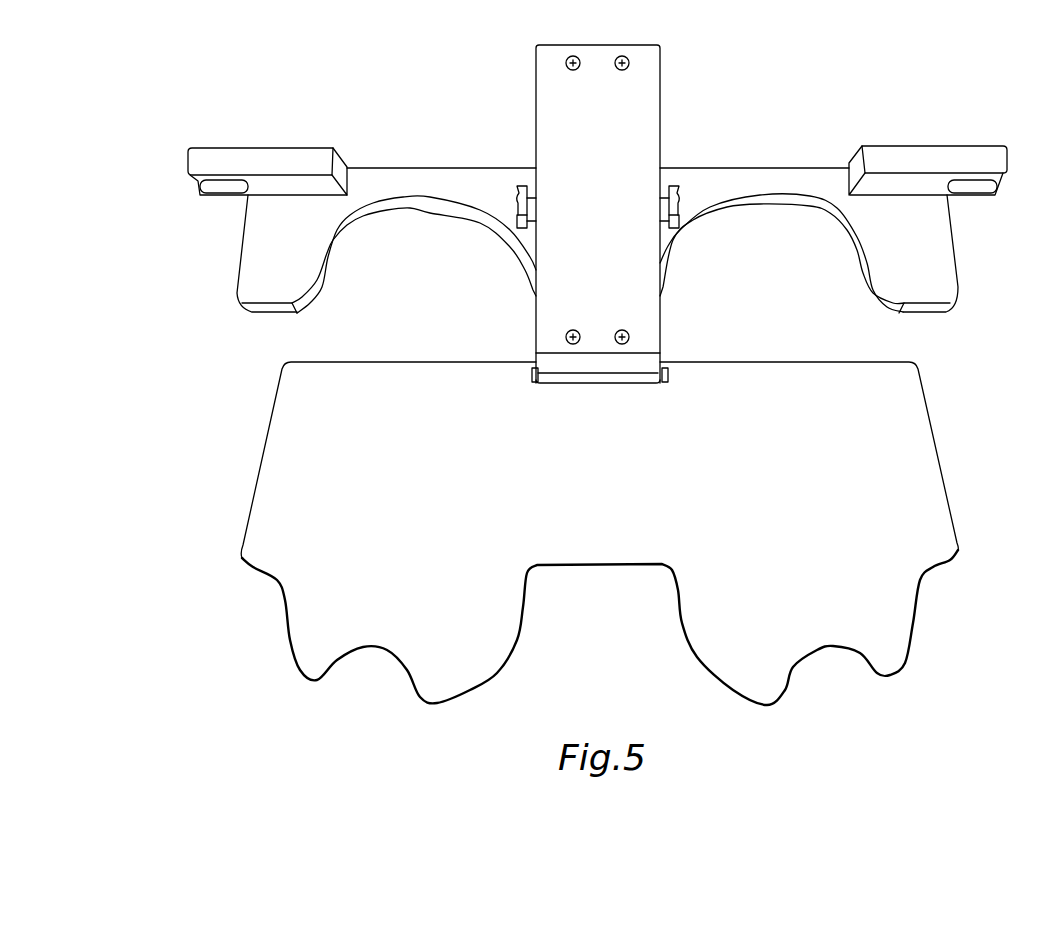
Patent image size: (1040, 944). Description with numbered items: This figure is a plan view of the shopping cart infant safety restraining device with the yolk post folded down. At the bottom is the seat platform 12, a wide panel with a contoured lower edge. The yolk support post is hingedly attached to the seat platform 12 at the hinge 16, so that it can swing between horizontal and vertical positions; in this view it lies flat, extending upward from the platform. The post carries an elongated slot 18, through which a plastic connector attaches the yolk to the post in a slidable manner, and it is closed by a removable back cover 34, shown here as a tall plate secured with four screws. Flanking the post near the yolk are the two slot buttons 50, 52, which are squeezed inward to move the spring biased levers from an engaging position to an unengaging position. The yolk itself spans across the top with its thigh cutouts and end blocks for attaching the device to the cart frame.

The seat platform 12 is at (390, 375).
The hinge attachment 16 is at (663, 368).
The elongated slot 18 is at (547, 298).
The back cover 34 is at (643, 93).
The slot button 50 is at (521, 187).
The slot button 52 is at (673, 187).